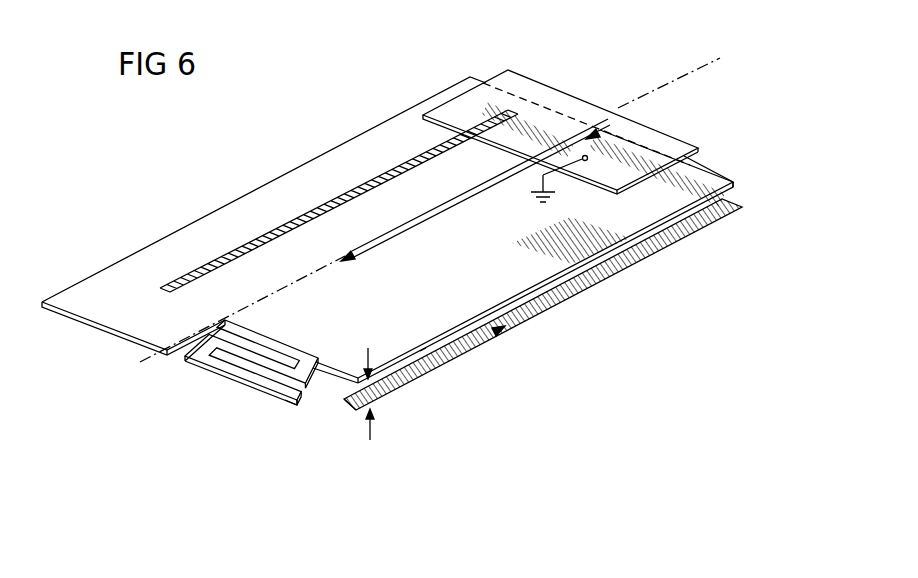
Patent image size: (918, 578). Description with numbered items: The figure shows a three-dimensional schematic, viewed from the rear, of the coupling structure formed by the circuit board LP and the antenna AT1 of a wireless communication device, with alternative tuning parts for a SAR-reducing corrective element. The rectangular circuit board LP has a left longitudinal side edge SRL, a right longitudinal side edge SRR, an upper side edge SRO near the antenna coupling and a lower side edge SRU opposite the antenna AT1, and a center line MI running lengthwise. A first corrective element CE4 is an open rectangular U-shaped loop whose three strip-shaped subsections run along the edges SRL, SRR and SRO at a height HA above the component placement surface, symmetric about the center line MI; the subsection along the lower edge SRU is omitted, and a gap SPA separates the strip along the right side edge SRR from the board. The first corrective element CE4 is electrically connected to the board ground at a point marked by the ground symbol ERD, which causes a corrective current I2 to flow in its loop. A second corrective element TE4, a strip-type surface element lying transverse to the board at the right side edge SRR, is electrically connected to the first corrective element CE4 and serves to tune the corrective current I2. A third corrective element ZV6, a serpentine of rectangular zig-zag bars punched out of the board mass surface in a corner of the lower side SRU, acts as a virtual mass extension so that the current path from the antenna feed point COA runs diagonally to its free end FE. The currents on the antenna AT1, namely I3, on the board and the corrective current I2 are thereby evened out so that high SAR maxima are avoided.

The left longitudinal side edge SRL is at (293, 172).
The lower side edge SRU is at (78, 321).
The upper side edge SRO is at (722, 175).
The circuit board LP is at (580, 298).
The center line MI is at (138, 361).
The third corrective element ZV6 is at (221, 388).
The free end FE is at (308, 406).
The height HA is at (360, 372).
The right longitudinal side edge SRR is at (527, 302).
The first corrective element CE4 is at (398, 384).
The gap SPA is at (420, 357).
The corrective current I2 is at (458, 355).
The second corrective element TE4 is at (530, 248).
The antenna AT1 is at (516, 148).
The electrical connection ERD is at (532, 180).
The electrical current on the antenna I3 is at (588, 134).
The antenna feed point COA is at (613, 126).